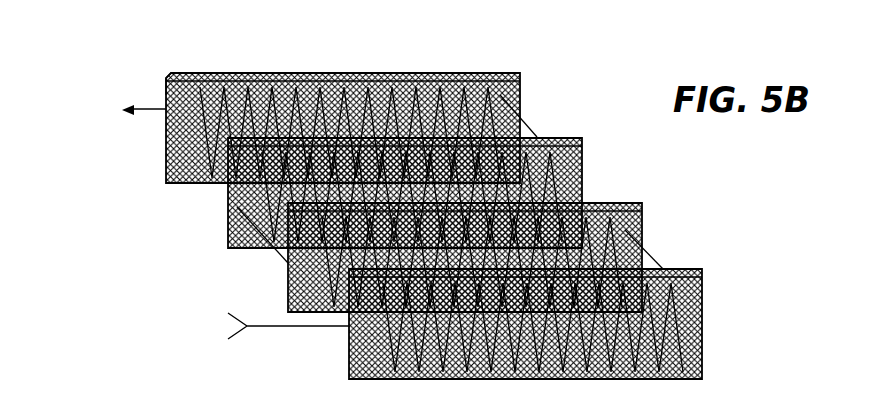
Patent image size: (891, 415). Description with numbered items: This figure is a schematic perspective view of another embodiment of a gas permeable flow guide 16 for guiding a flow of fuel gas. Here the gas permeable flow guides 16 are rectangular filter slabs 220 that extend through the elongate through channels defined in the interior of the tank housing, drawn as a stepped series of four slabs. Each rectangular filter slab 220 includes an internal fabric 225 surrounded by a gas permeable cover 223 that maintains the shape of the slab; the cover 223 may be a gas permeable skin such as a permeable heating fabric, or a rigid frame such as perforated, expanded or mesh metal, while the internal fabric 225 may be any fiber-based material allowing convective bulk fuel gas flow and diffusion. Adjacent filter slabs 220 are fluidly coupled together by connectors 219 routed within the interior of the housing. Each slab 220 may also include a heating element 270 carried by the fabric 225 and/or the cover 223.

The gas permeable flow guide 16 is at (148, 157).
The connector 219 is at (530, 122).
The rectangular filter slab 220 is at (492, 70).
The gas permeable cover 223 is at (172, 73).
The internal fabric 225 is at (204, 74).
The heating element 270 is at (702, 327).